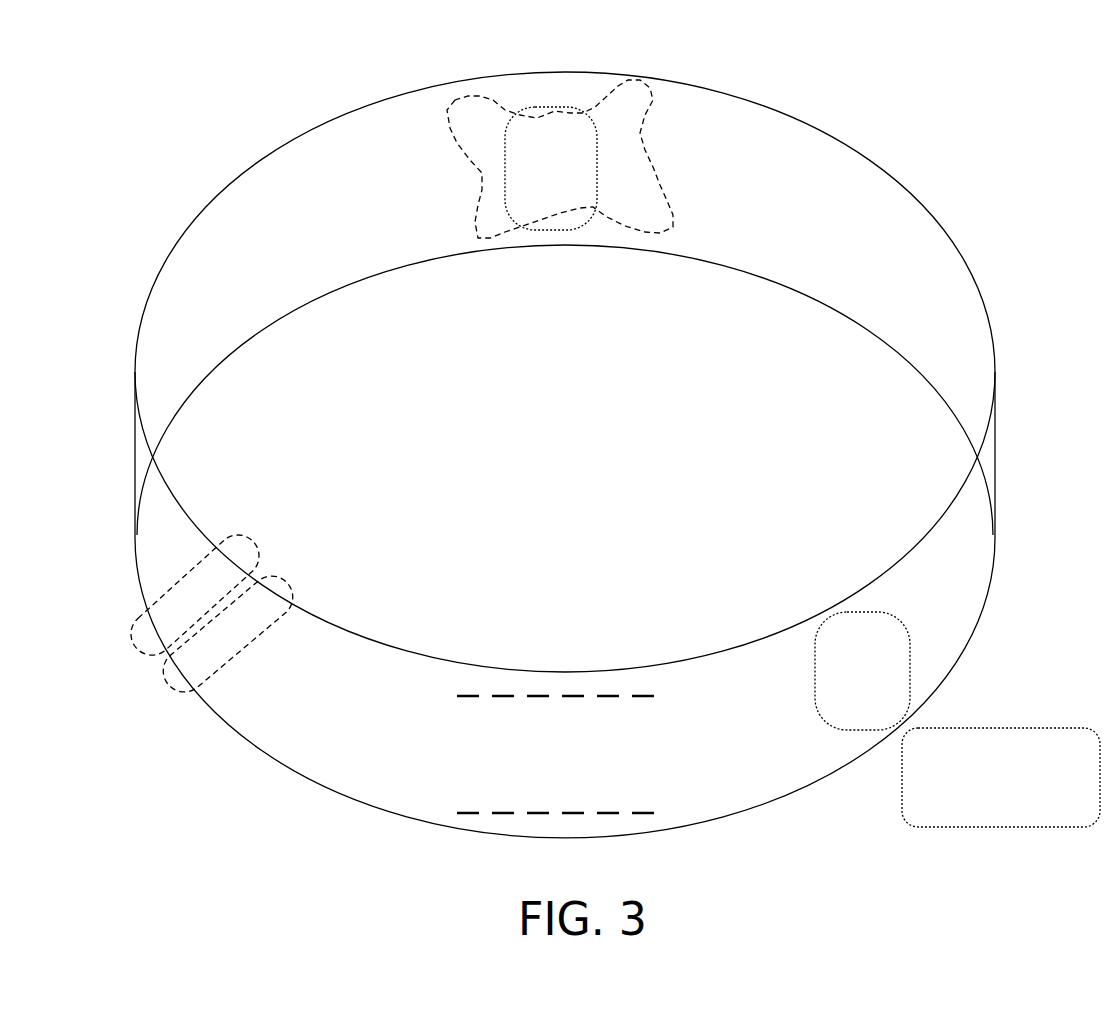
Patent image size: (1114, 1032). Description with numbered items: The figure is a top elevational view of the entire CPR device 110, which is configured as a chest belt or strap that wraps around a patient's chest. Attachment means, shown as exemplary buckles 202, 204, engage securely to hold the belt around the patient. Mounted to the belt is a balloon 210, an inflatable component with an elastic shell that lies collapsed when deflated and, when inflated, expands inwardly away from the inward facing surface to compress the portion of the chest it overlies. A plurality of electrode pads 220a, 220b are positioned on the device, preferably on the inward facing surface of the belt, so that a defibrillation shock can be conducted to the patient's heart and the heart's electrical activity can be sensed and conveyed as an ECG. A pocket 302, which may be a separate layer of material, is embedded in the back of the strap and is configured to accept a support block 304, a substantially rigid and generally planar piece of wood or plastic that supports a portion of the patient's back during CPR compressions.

The CPR device 110 is at (98, 137).
The buckle 202 is at (149, 658).
The buckle 204 is at (188, 695).
The balloon 210 is at (488, 132).
The electrode pad 220a is at (551, 168).
The electrode pad 220b is at (862, 671).
The pocket 302 is at (480, 727).
The support block 304 is at (1001, 777).